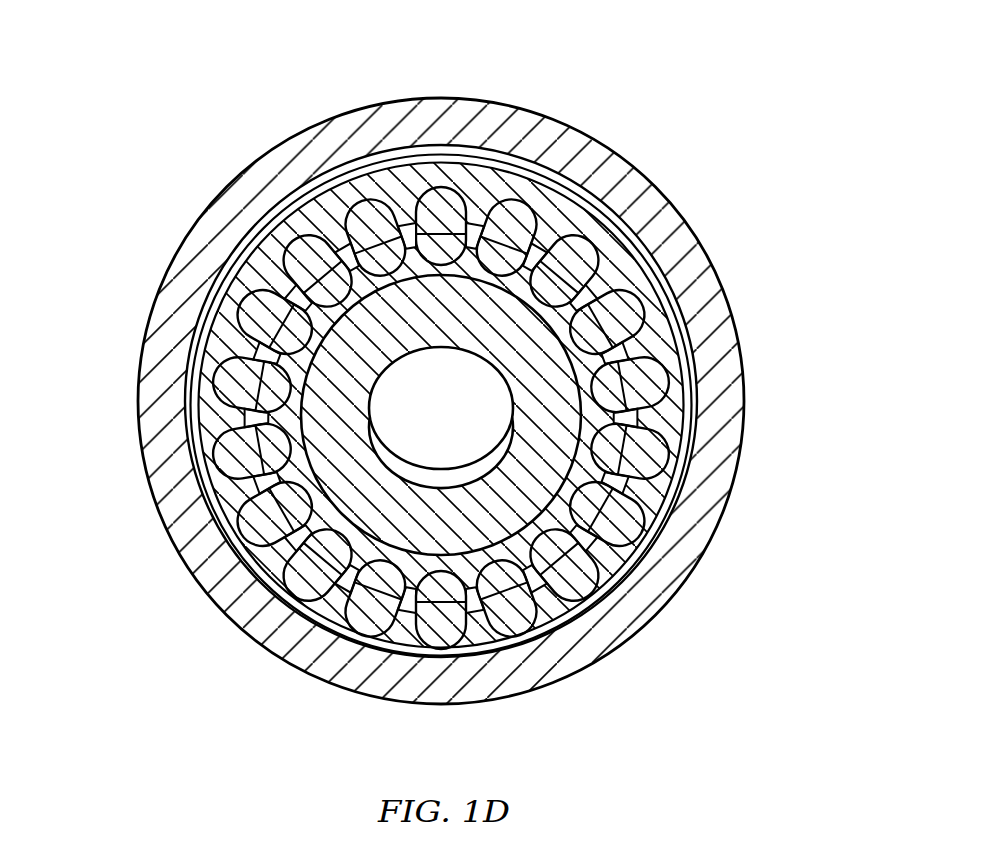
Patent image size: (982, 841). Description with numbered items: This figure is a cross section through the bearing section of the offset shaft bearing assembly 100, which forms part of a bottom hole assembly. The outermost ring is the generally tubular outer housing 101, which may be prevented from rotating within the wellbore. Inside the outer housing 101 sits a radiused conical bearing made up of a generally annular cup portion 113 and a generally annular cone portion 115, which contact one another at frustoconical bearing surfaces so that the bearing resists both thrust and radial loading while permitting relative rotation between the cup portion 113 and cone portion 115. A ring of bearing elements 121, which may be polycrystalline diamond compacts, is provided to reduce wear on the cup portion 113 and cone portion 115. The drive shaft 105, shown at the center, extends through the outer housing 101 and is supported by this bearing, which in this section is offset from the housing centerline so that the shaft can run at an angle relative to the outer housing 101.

The offset shaft bearing assembly 100 is at (453, 356).
The outer housing 101 is at (493, 112).
The drive shaft 105 is at (275, 577).
The cup portion 113 is at (615, 263).
The cone portion 115 is at (595, 362).
The bearing elements 121 is at (648, 453).